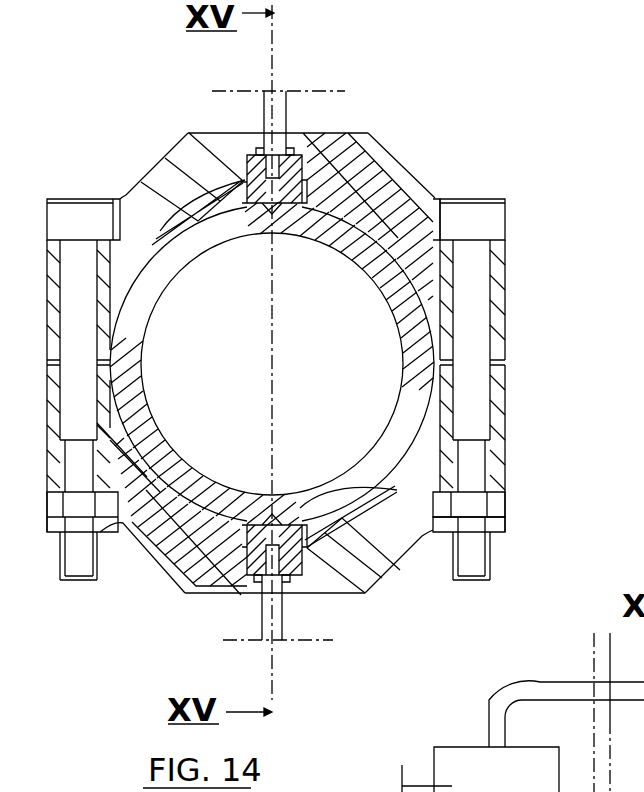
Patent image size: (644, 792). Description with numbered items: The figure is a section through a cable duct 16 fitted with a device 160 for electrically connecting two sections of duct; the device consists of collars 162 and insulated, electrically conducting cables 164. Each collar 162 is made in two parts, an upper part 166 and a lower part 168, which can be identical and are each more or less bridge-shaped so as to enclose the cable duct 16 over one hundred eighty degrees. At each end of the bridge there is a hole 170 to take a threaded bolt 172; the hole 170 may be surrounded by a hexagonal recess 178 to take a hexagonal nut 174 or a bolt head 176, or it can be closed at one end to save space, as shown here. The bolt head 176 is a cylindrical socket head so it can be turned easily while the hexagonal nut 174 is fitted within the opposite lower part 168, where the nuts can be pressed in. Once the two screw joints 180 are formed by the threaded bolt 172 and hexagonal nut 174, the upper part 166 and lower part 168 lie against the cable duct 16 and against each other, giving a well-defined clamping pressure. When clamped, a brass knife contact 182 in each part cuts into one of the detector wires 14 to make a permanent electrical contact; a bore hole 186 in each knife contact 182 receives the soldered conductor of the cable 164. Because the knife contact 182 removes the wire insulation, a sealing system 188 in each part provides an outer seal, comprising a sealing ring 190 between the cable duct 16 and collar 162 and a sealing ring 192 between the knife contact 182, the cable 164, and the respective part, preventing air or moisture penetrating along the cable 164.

The detector wire 14 is at (276, 214).
The cable duct 16 is at (357, 480).
The device 160 is at (353, 361).
The collar 162 is at (376, 128).
The cable 164 is at (281, 106).
The upper part 166 is at (163, 178).
The lower part 168 is at (128, 520).
The hole 170 is at (487, 392).
The threaded bolt 172 is at (480, 283).
The hexagonal nut 174 is at (496, 498).
The bolt head 176 is at (495, 209).
The hexagonal recess 178 is at (437, 207).
The screw joint 180 is at (498, 299).
The knife contact 182 is at (340, 594).
The bore hole 186 is at (262, 158).
The sealing system 188 is at (198, 548).
The sealing ring 190 is at (165, 518).
The sealing ring 192 is at (292, 580).